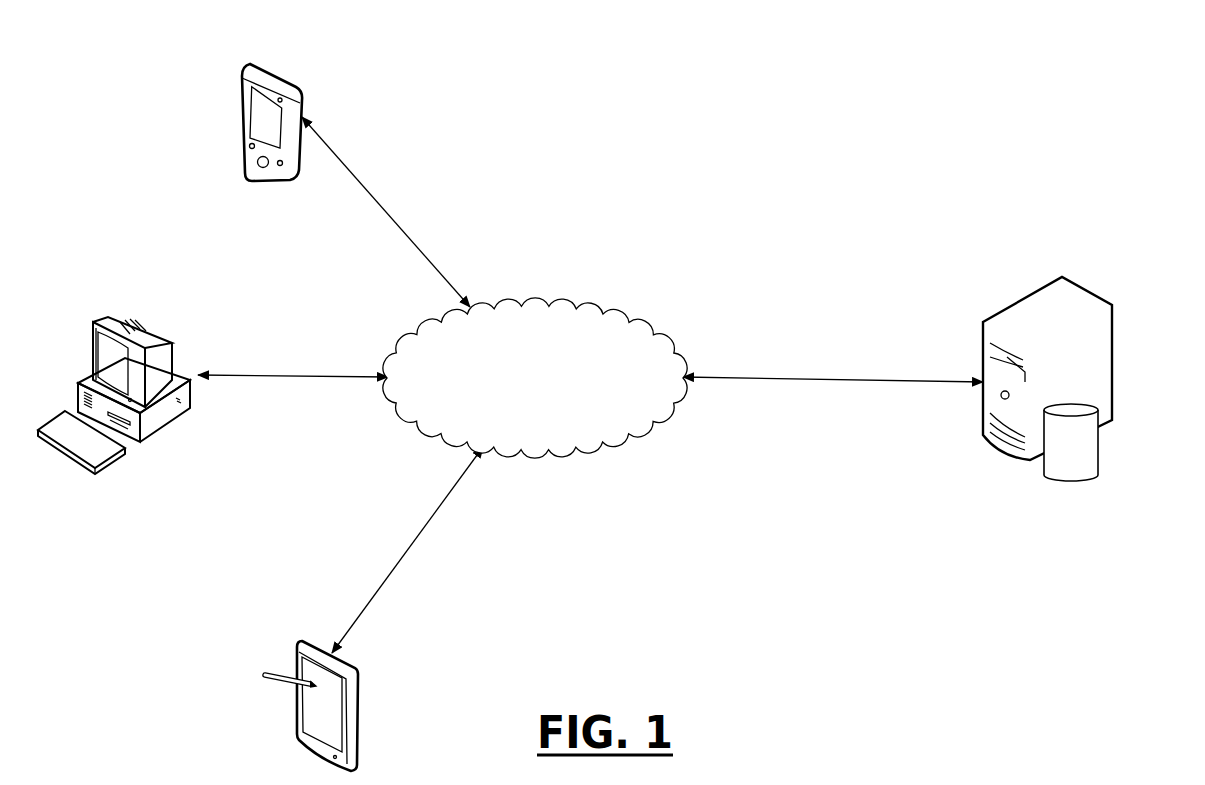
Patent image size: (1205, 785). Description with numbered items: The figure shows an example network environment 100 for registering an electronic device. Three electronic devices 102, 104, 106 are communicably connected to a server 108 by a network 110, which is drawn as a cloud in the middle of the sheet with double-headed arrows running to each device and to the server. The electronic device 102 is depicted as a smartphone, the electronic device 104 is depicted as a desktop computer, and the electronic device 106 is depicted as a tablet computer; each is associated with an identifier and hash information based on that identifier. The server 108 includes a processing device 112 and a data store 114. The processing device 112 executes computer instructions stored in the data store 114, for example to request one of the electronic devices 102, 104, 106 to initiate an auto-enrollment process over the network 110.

The network environment 100 is at (673, 41).
The electronic device 102 is at (292, 83).
The electronic device 104 is at (148, 328).
The electronic device 106 is at (350, 660).
The server 108 is at (955, 435).
The network 110 is at (535, 305).
The processing device 112 is at (1088, 290).
The data store 114 is at (1097, 475).